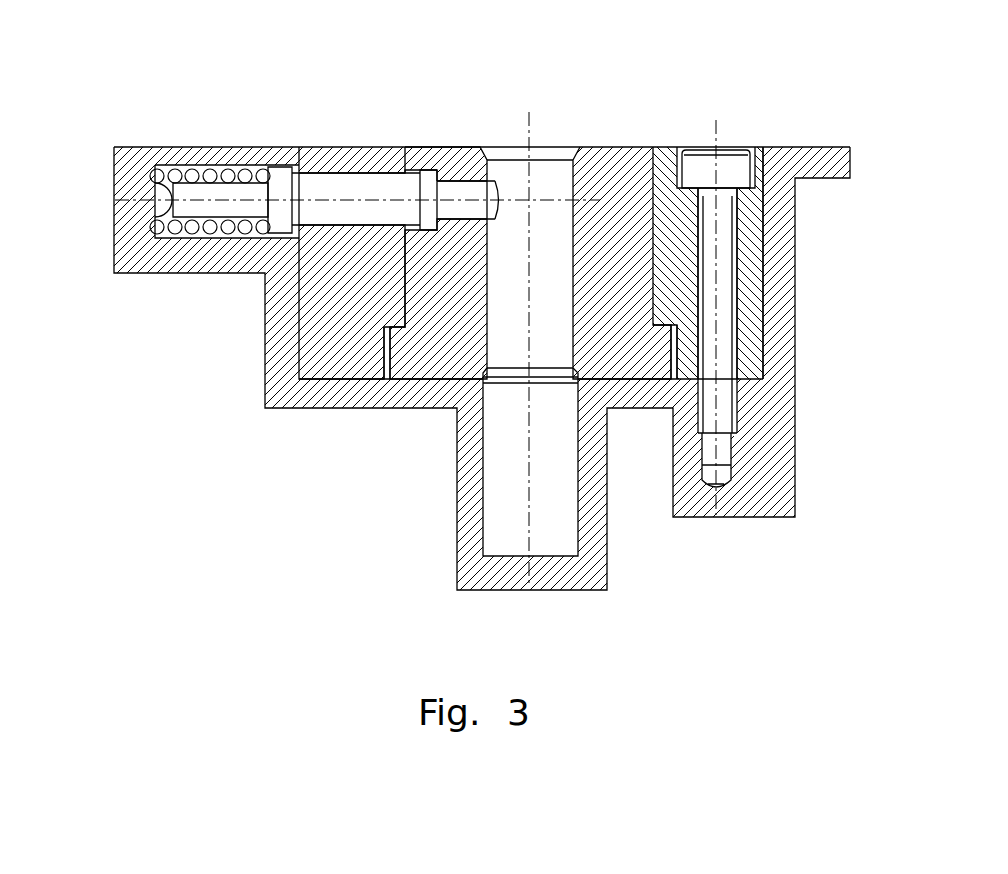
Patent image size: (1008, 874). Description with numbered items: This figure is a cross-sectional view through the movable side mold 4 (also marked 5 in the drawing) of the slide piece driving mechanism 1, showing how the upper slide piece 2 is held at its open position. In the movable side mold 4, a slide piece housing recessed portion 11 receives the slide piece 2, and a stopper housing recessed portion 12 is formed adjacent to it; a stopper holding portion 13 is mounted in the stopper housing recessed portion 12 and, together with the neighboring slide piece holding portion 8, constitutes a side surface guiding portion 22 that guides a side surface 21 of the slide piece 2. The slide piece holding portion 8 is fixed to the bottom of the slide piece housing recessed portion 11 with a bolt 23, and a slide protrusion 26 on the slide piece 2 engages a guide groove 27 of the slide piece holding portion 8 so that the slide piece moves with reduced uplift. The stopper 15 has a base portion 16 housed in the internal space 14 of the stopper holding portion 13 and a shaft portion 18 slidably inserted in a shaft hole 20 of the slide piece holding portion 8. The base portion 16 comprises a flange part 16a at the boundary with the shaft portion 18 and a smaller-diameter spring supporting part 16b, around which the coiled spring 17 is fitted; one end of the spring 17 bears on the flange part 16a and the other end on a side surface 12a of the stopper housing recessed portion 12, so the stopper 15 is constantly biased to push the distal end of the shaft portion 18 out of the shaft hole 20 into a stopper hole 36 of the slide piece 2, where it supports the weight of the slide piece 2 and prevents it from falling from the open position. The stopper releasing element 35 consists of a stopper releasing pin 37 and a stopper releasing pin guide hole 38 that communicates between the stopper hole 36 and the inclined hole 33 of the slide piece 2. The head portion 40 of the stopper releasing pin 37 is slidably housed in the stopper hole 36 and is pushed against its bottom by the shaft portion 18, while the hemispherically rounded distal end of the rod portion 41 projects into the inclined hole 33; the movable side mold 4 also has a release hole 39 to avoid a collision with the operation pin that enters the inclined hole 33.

The slide piece driving mechanism 1 is at (185, 147).
The slide piece 2 is at (595, 146).
The movable side mold 4 is at (792, 146).
The base 5 is at (495, 298).
The slide piece holding portion 8 is at (531, 245).
The slide piece housing recessed portion 11 is at (735, 165).
The stopper housing recessed portion 12 is at (153, 259).
The side surface of the stopper housing recessed portion 12a is at (158, 185).
The stopper holding portion 13 is at (231, 147).
The internal space 14 is at (192, 212).
The stopper 15 is at (355, 173).
The base portion 16 is at (187, 306).
The flange part 16a is at (277, 233).
The spring supporting part 16b is at (160, 226).
The spring 17 is at (163, 147).
The shaft portion 18 is at (325, 187).
The shaft hole 20 is at (317, 225).
The side surface 21 is at (405, 345).
The side surface guiding portion 22 is at (459, 245).
The bolt 23 is at (720, 275).
The slide protrusion 26 is at (393, 378).
The guide groove 27 is at (403, 258).
The inclined hole 33 is at (560, 345).
The stopper releasing element 35 is at (461, 185).
The stopper hole 36 is at (453, 182).
The stopper releasing pin 37 is at (464, 191).
The stopper releasing pin guide hole 38 is at (488, 225).
The release hole 39 is at (505, 537).
The head portion 40 is at (428, 182).
The rod portion 41 is at (497, 188).